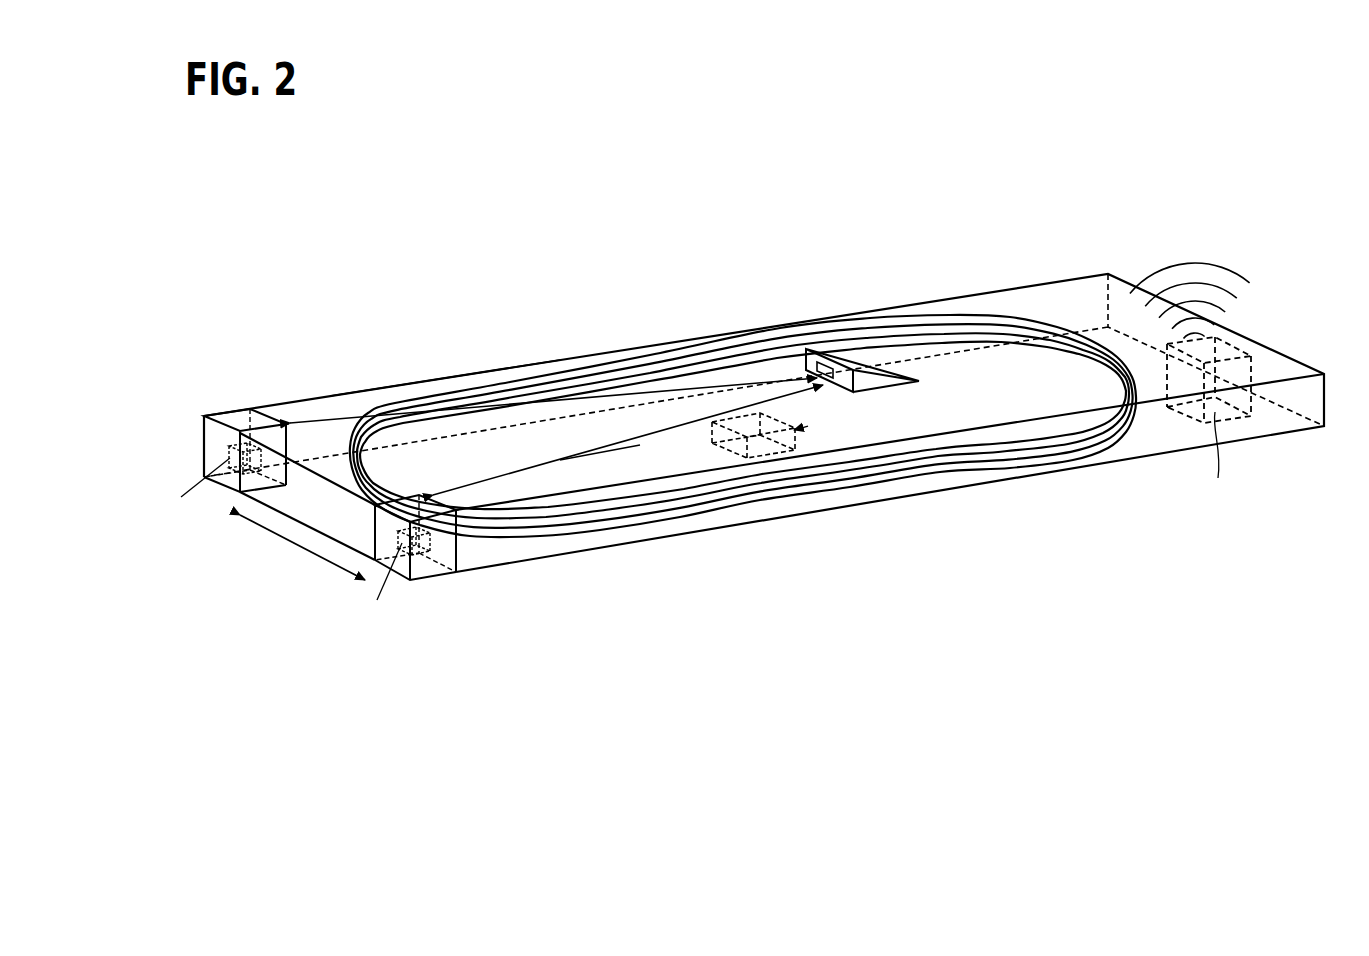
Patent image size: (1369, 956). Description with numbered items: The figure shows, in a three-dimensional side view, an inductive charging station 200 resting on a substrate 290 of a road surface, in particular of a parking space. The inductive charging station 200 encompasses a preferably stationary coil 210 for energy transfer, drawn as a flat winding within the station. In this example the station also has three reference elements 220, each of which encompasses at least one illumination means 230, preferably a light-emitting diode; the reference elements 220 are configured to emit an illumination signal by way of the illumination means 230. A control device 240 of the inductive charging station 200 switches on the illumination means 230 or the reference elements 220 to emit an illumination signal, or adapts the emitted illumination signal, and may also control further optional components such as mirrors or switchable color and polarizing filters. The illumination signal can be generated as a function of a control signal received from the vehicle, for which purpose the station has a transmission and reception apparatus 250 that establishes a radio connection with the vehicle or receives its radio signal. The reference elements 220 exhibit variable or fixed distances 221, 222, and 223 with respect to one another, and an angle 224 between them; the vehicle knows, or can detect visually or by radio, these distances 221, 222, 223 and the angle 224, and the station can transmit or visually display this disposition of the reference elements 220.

The inductive charging station 200 is at (530, 312).
The substrate 290 is at (1048, 266).
The coil 210 is at (617, 365).
The reference element 220 is at (226, 412).
The illumination means 230 is at (228, 456).
The distance 221 is at (292, 547).
The distance 222 is at (598, 456).
The distance 223 is at (333, 398).
The angle 224 is at (720, 397).
The control device 240 is at (760, 448).
The transmission and reception apparatus 250 is at (1224, 350).